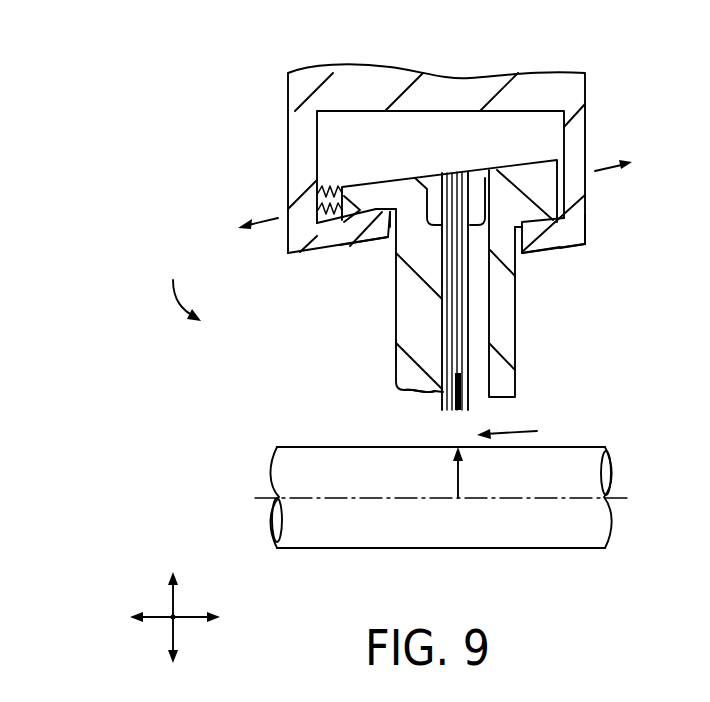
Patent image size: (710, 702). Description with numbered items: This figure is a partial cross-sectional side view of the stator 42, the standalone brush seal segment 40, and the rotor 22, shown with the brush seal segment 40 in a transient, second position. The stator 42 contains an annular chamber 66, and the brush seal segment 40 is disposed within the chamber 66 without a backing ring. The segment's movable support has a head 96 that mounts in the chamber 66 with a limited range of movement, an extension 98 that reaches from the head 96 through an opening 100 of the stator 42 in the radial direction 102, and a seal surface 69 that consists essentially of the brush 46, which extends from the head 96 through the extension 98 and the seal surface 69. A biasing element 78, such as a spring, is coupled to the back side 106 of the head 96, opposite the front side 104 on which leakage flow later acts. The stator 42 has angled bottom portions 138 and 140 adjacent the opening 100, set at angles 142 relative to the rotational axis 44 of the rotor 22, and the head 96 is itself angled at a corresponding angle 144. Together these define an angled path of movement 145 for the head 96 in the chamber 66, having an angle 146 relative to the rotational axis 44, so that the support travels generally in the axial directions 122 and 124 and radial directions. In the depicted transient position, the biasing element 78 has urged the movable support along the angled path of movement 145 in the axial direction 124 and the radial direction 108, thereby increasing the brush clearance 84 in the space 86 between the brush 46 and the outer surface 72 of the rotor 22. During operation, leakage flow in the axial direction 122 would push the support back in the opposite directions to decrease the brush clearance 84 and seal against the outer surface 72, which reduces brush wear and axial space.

The rotor 22 is at (578, 532).
The brush seal segment 40 is at (180, 284).
The stator 42 is at (288, 95).
The rotational axis 44 is at (403, 498).
The brush 46 is at (468, 390).
The chamber 66 is at (555, 133).
The seal surface 69 is at (413, 391).
The outer surface 72 is at (277, 446).
The biasing element 78 is at (337, 196).
The brush clearance 84 is at (458, 482).
The space 86 is at (523, 430).
The head 96 is at (533, 177).
The extension 98 is at (398, 350).
The opening 100 is at (393, 222).
The radial direction 102 is at (177, 633).
The front side 104 is at (515, 347).
The back side 106 is at (397, 320).
The radial direction 108 is at (172, 598).
The axial direction 122 is at (157, 619).
The axial direction 124 is at (193, 613).
The angled bottom portion 138 is at (325, 237).
The angled bottom portion 140 is at (583, 238).
The angle 142 is at (352, 247).
The angle 144 is at (402, 182).
The angled path of movement 145 is at (610, 175).
The angle 146 is at (585, 227).